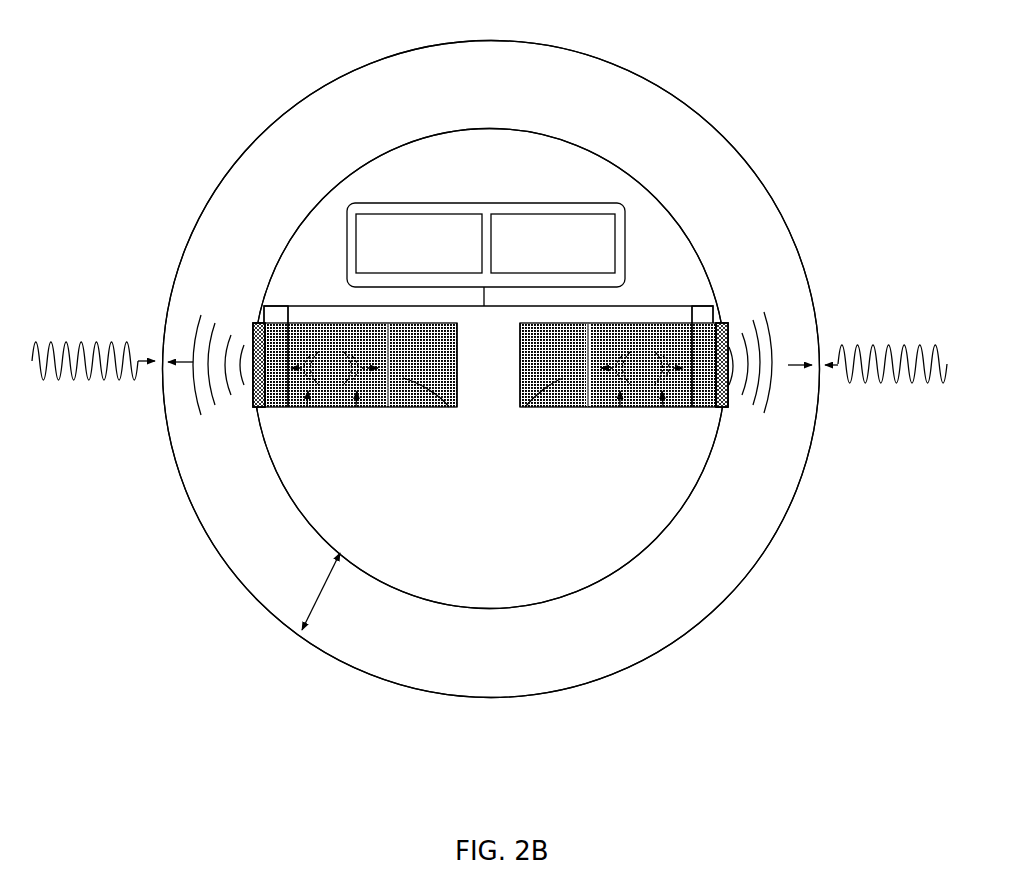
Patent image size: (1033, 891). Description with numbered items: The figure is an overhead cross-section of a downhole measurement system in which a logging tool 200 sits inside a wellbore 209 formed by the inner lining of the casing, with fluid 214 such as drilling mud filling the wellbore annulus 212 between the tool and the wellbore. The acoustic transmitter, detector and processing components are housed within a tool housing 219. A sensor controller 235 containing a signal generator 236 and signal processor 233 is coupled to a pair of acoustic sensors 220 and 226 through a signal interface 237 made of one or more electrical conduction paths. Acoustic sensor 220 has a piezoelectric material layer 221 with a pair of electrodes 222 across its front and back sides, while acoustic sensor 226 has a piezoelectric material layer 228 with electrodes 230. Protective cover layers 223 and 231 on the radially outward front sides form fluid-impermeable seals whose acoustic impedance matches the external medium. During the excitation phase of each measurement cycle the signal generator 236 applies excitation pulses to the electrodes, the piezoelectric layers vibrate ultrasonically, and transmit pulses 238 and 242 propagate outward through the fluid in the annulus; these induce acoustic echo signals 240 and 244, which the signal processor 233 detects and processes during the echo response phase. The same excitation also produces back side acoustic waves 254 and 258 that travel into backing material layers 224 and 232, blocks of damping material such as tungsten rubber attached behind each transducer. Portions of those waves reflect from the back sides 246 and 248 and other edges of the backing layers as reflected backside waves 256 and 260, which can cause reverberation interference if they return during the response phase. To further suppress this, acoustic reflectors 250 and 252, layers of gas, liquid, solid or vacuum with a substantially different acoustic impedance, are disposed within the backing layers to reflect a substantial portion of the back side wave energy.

The logging tool 200 is at (277, 237).
The wellbore 209 is at (512, 40).
The wellbore annulus 212 is at (325, 591).
The fluid 214 is at (717, 215).
The tool housing 219 is at (493, 128).
The acoustic sensor 220 is at (337, 447).
The piezoelectric material layer 221 is at (259, 408).
The electrodes 222 is at (267, 329).
The protective cover layer 223 is at (259, 320).
The backing material layer 224 is at (449, 407).
The acoustic sensor 226 is at (642, 447).
The piezoelectric material layer 228 is at (707, 408).
The electrodes 230 is at (714, 329).
The protective cover layer 231 is at (725, 322).
The backing material layer 232 is at (525, 407).
The signal processor 233 is at (582, 210).
The sensor controller 235 is at (468, 203).
The signal generator 236 is at (405, 213).
The signal interface 237 is at (625, 306).
The transmit pulse 238 is at (185, 386).
The acoustic echo signal 240 is at (113, 335).
The transmit pulse 242 is at (791, 394).
The acoustic echo signal 244 is at (867, 337).
The back side 246 is at (458, 370).
The back side 248 is at (519, 370).
The acoustic reflector 250 is at (394, 407).
The acoustic reflector 252 is at (588, 407).
The back side acoustic wave 254 is at (356, 407).
The reflected backside wave 256 is at (307, 407).
The back side acoustic wave 258 is at (620, 407).
The reflected backside wave 260 is at (663, 407).